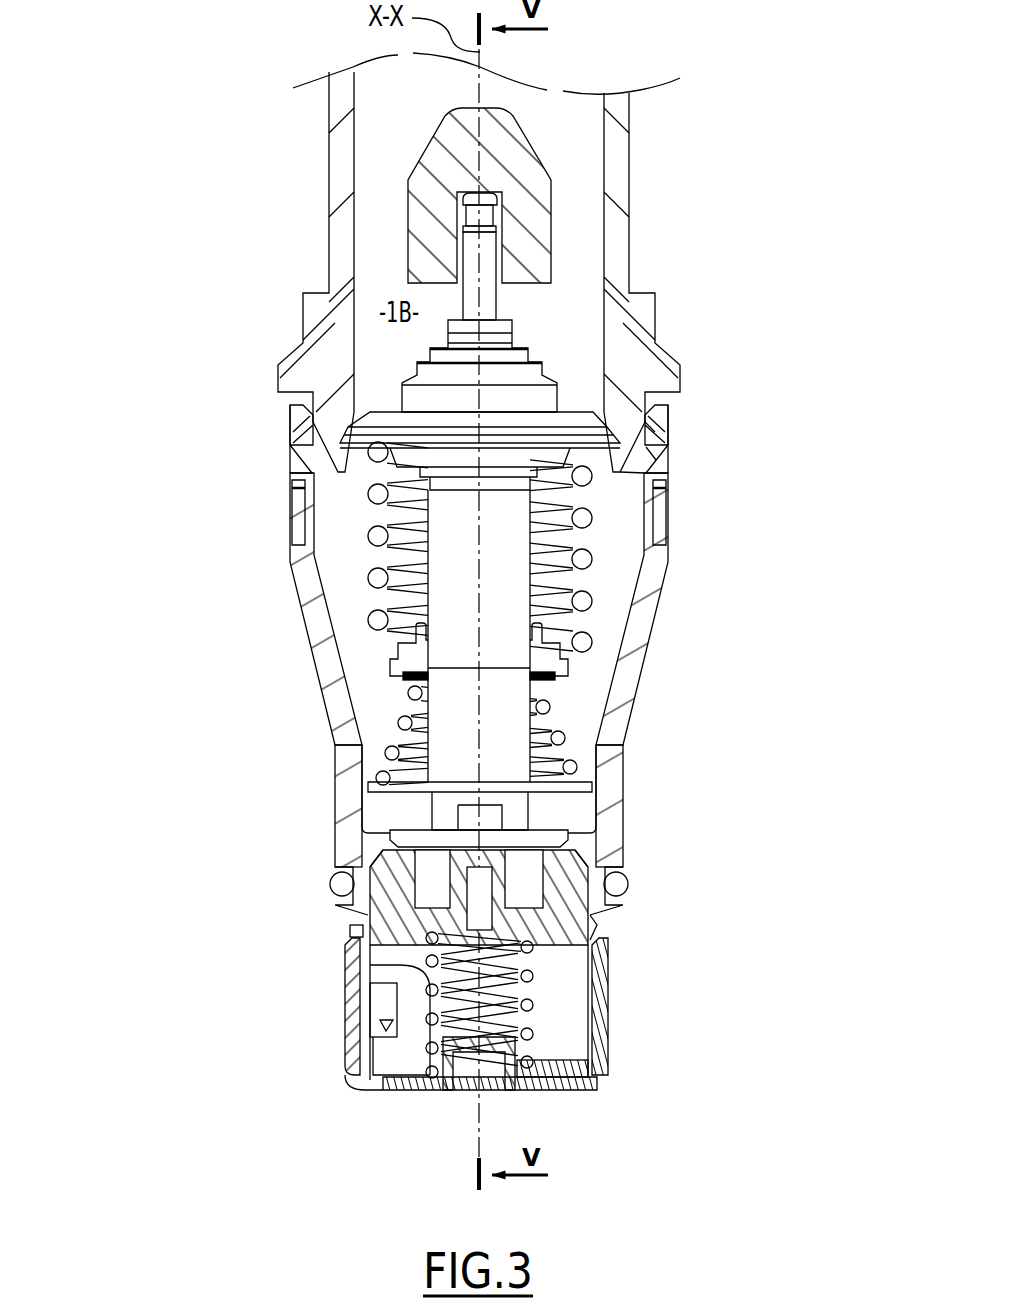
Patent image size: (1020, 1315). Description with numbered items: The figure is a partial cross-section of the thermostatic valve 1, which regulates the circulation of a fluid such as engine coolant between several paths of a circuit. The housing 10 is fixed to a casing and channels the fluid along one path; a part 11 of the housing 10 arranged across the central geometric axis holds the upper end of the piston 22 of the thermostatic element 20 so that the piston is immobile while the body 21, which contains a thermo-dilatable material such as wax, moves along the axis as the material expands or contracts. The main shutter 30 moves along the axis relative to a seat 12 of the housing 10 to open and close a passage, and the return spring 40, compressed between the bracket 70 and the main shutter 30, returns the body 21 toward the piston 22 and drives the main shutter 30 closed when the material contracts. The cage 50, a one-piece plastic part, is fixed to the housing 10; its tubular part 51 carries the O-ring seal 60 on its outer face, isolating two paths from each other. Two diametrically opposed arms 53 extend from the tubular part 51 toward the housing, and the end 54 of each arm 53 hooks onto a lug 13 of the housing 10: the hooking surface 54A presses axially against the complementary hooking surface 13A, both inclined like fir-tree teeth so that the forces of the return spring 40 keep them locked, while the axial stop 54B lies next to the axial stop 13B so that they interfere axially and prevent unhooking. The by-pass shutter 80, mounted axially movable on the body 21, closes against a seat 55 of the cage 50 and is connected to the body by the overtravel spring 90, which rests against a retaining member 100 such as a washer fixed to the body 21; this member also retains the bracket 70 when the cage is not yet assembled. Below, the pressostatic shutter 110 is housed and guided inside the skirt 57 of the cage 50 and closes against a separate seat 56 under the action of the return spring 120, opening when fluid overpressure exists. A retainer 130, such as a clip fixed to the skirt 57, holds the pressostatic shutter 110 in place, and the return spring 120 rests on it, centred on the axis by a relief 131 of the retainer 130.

The thermostatic valve 1 is at (224, 147).
The housing 10 is at (328, 248).
The part of the housing 11 is at (508, 160).
The seat 12 is at (366, 452).
The lug 13 is at (625, 427).
The complementary hooking surface 13A is at (661, 431).
The axial stop 13B is at (627, 482).
The thermostatic element 20 is at (572, 487).
The body 21 is at (498, 520).
The piston 22 is at (488, 267).
The main shutter 30 is at (581, 414).
The return spring 40 is at (358, 575).
The cage 50 is at (472, 660).
The tubular part 51 is at (592, 877).
The arm 53 is at (310, 603).
The end of the arm 54 is at (300, 436).
The hooking surface 54A is at (664, 451).
The axial stop 54B is at (667, 483).
The seat 55 is at (574, 815).
The seat 56 is at (605, 908).
The skirt 57 is at (358, 1005).
The seal 60 is at (329, 886).
The bracket 70 is at (400, 657).
The by-pass shutter 80 is at (383, 788).
The overtravel spring 90 is at (392, 723).
The retaining member 100 is at (400, 680).
The pressostatic shutter 110 is at (362, 920).
The return spring 120 is at (548, 980).
The retainer 130 is at (407, 1102).
The relief 131 is at (542, 1022).